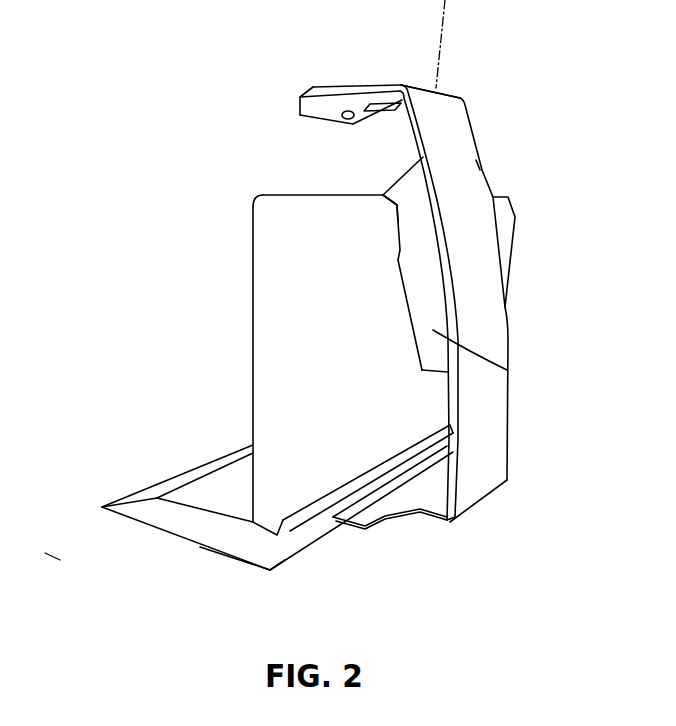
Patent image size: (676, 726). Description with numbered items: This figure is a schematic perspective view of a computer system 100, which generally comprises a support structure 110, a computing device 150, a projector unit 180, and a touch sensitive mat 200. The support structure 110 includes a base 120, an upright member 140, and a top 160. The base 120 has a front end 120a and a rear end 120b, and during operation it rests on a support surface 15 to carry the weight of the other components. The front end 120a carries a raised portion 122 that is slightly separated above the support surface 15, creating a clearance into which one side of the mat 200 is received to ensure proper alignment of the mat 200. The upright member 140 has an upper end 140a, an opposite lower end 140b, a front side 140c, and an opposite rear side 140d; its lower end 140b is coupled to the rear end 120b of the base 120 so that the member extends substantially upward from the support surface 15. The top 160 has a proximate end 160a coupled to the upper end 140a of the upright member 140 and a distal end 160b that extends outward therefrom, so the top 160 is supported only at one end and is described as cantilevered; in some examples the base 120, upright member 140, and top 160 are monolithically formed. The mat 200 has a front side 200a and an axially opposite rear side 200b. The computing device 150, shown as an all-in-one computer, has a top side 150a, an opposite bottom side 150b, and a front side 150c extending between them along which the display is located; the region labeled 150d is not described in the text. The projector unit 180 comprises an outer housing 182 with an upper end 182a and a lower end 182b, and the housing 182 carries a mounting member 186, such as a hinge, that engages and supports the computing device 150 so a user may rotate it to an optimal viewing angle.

The support surface 15 is at (83, 563).
The computer system 100 is at (122, 212).
The support structure 110 is at (557, 202).
The base 120 is at (394, 526).
The front end 120a is at (390, 477).
The rear end 120b is at (449, 529).
The raised portion 122 is at (337, 519).
The upright member 140 is at (480, 415).
The upper end 140a is at (495, 74).
The lower end 140b is at (477, 498).
The front side 140c is at (407, 141).
The rear side 140d is at (478, 163).
The computing device 150 is at (253, 220).
The top side 150a is at (318, 195).
The bottom side 150b is at (262, 540).
The front side 150c is at (253, 333).
The front wall face 150d is at (340, 295).
The top 160 is at (385, 70).
The proximate end 160a is at (463, 96).
The distal end 160b is at (295, 112).
The projector unit 180 is at (447, 293).
The outer housing 182 is at (507, 371).
The upper end 182a is at (423, 157).
The lower end 182b is at (430, 373).
The mounting member 186 is at (397, 222).
The touch sensitive mat 200 is at (136, 502).
The front side 200a is at (177, 478).
The rear side 200b is at (285, 563).